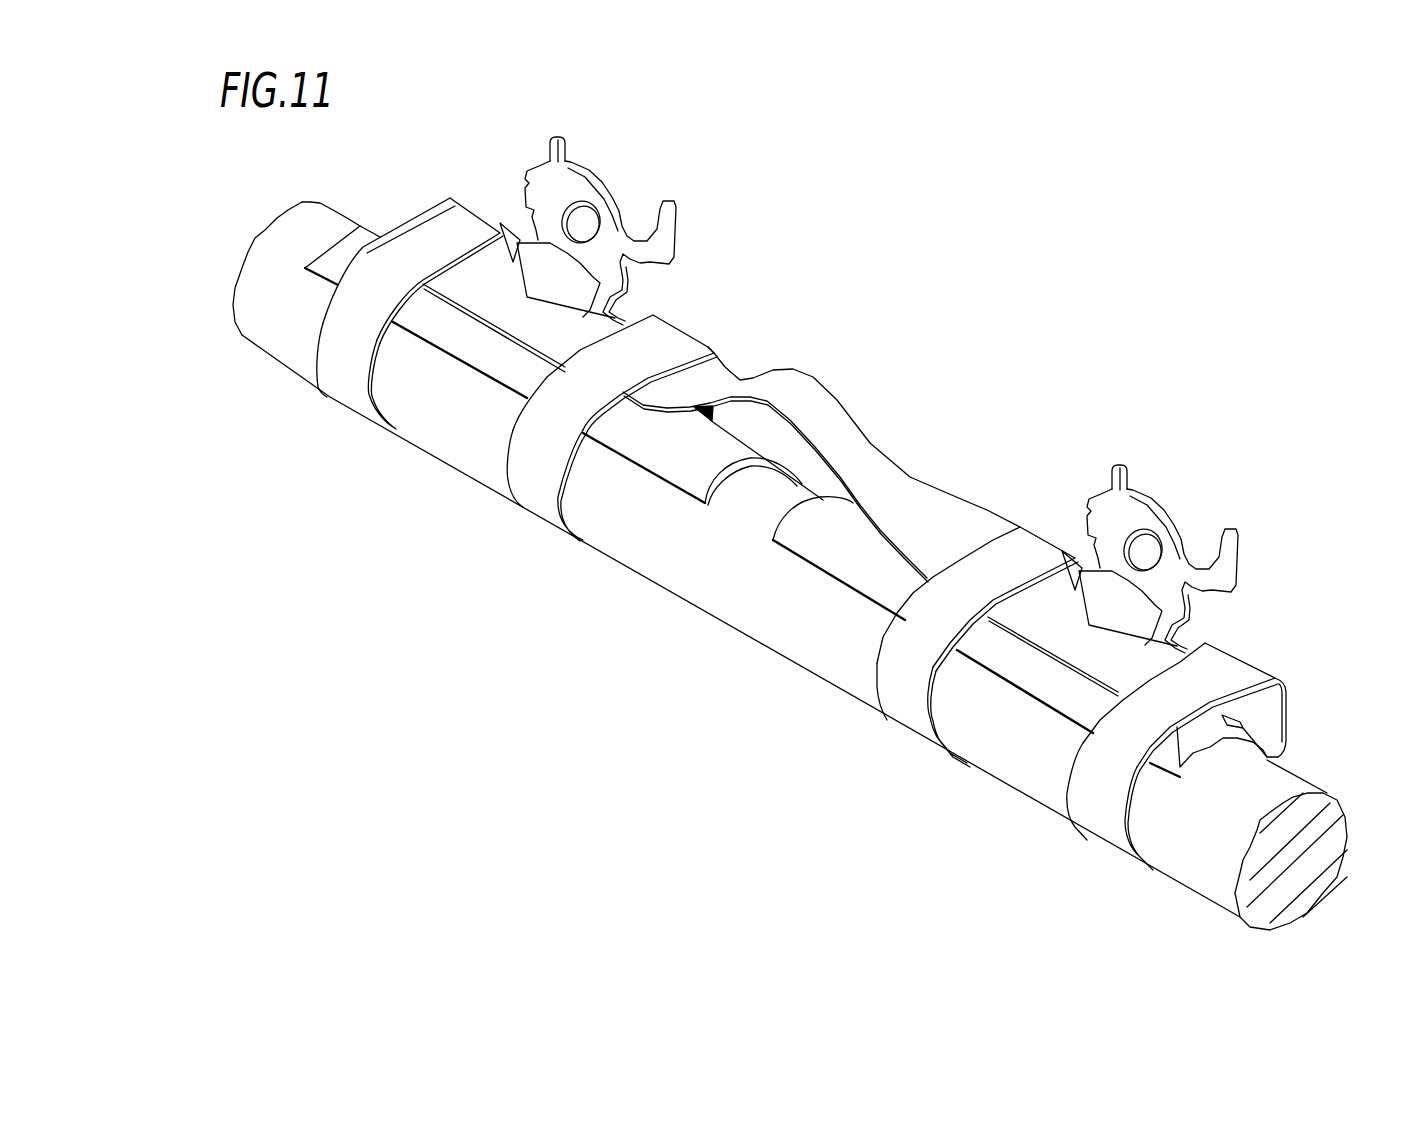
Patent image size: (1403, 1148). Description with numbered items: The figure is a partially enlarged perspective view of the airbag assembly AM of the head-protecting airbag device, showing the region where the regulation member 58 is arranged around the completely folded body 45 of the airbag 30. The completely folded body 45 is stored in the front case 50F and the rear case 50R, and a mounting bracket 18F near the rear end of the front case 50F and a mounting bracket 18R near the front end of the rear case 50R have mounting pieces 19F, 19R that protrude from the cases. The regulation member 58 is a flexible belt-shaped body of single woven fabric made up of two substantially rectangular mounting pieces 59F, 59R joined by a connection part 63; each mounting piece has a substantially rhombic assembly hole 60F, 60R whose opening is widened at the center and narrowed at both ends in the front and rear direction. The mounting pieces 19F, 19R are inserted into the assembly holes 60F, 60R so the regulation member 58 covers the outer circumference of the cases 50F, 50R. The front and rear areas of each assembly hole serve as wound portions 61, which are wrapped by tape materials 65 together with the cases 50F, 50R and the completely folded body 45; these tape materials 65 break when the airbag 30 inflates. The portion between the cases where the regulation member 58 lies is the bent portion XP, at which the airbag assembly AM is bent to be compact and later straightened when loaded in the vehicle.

The mounting piece 19F is at (599, 154).
The mounting bracket 18F is at (607, 182).
The mounting piece 19R is at (1162, 484).
The mounting bracket 18R is at (1169, 509).
The wound portion 61 is at (473, 225).
The tape material 65 is at (357, 393).
The connection part 63 is at (845, 437).
The regulation member 58 is at (790, 503).
The mounting piece 59F is at (483, 302).
The assembly hole 60F is at (557, 310).
The mounting piece 59R is at (1040, 630).
The assembly hole 60R is at (1118, 640).
The front case 50F is at (672, 457).
The rear case 50R is at (893, 585).
The completely folded body 45 is at (727, 595).
The airbag 30 is at (790, 566).
The airbag assembly AM is at (285, 627).
The bent portion XP is at (700, 577).